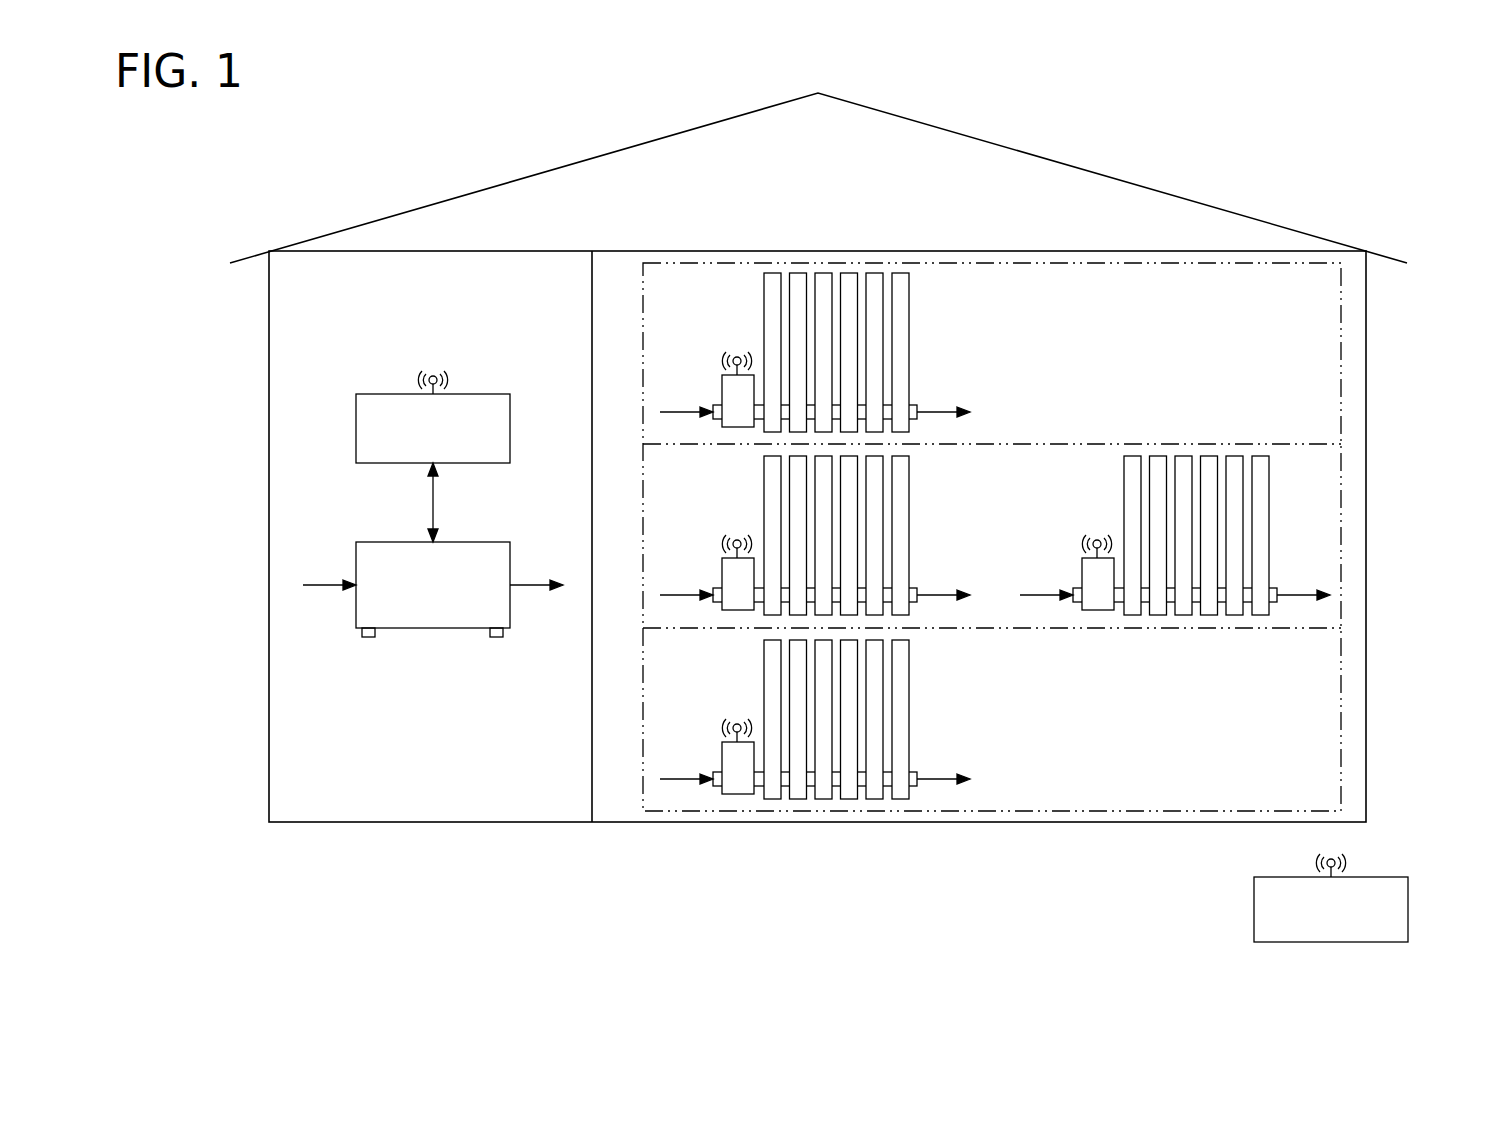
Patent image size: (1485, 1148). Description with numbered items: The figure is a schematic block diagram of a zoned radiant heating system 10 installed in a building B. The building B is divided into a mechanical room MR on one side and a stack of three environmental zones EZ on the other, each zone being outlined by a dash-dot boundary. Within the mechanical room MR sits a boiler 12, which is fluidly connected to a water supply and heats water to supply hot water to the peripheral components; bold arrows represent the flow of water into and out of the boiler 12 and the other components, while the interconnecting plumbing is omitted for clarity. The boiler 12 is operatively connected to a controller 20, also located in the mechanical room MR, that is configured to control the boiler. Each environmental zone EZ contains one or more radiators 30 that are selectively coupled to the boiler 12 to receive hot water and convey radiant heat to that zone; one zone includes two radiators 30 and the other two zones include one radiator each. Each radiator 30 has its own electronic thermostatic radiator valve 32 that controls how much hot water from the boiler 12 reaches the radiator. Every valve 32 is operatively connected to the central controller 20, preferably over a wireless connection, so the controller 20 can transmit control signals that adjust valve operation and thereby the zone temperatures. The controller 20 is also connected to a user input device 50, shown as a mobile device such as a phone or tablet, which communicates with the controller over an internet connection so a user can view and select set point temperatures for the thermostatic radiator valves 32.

The zoned radiant heating system 10 is at (162, 864).
The boiler 12 is at (430, 629).
The controller 20 is at (488, 394).
The radiator 30 is at (997, 536).
The thermostatic radiator valve 32 is at (888, 552).
The user input device 50 is at (1254, 912).
The building B is at (1112, 177).
The mechanical room MR is at (502, 797).
The environmental zone EZ is at (1341, 357).